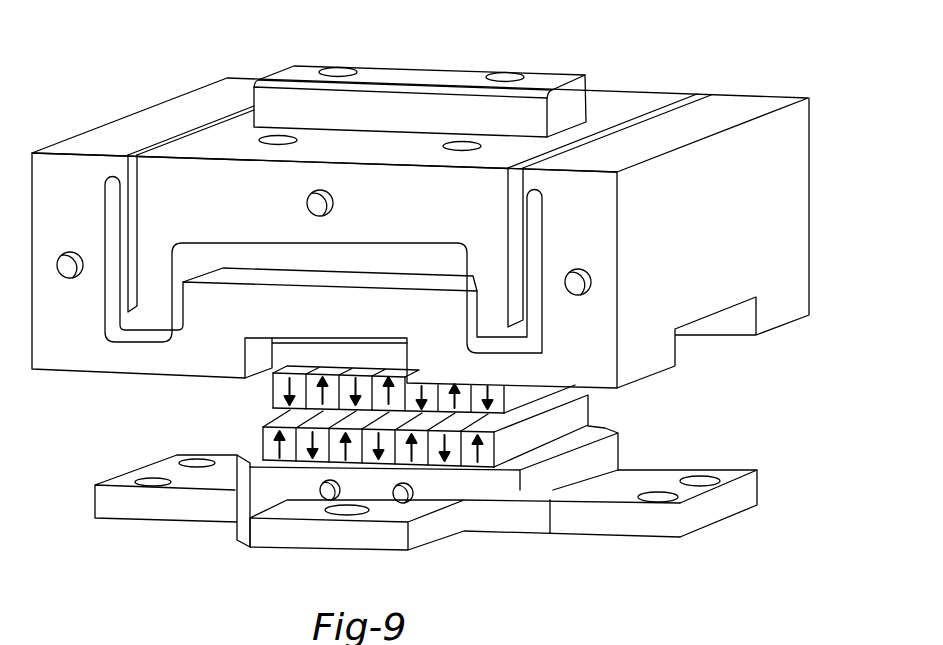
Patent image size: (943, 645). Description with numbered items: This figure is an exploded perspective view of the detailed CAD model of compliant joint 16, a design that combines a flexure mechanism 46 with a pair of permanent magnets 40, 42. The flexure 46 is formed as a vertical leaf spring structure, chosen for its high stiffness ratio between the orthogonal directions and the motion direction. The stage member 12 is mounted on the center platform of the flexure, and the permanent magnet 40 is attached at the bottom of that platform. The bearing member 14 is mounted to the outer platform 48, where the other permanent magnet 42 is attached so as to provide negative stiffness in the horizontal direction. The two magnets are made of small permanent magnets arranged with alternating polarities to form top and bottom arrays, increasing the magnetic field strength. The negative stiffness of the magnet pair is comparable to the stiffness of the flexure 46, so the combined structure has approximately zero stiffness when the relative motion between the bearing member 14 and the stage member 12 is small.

The stage member 12 is at (633, 100).
The bearing member 14 is at (630, 520).
The compliant joint 16 is at (802, 396).
The permanent magnet 40 is at (524, 394).
The permanent magnet 42 is at (548, 430).
The flexure mechanism 46 is at (532, 213).
The outer platform 48 is at (785, 209).